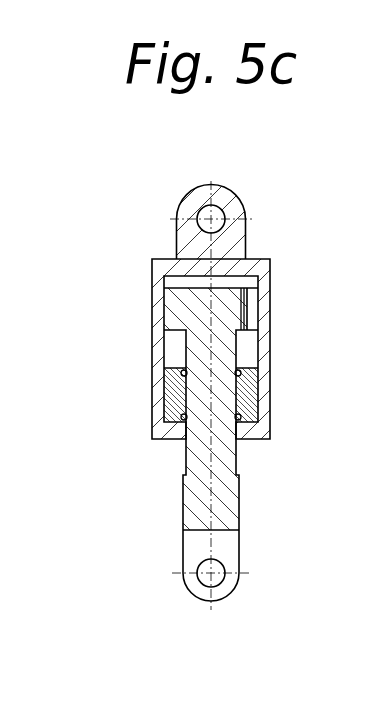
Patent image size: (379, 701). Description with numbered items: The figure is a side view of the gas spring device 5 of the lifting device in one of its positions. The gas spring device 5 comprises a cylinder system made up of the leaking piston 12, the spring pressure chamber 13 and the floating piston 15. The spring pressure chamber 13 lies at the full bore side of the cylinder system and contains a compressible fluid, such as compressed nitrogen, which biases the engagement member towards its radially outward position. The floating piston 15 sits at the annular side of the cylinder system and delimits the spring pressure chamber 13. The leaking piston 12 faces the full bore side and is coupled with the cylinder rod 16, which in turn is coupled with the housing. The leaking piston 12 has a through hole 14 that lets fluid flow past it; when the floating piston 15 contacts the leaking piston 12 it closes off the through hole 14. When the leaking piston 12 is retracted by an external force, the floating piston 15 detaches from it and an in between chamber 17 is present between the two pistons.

The gas spring device 5 is at (140, 433).
The leaking piston 12 is at (222, 303).
The spring pressure chamber 13 is at (217, 285).
The through hole 14 is at (243, 299).
The floating piston 15 is at (245, 397).
The cylinder rod 16 is at (222, 506).
The in between chamber 17 is at (245, 351).